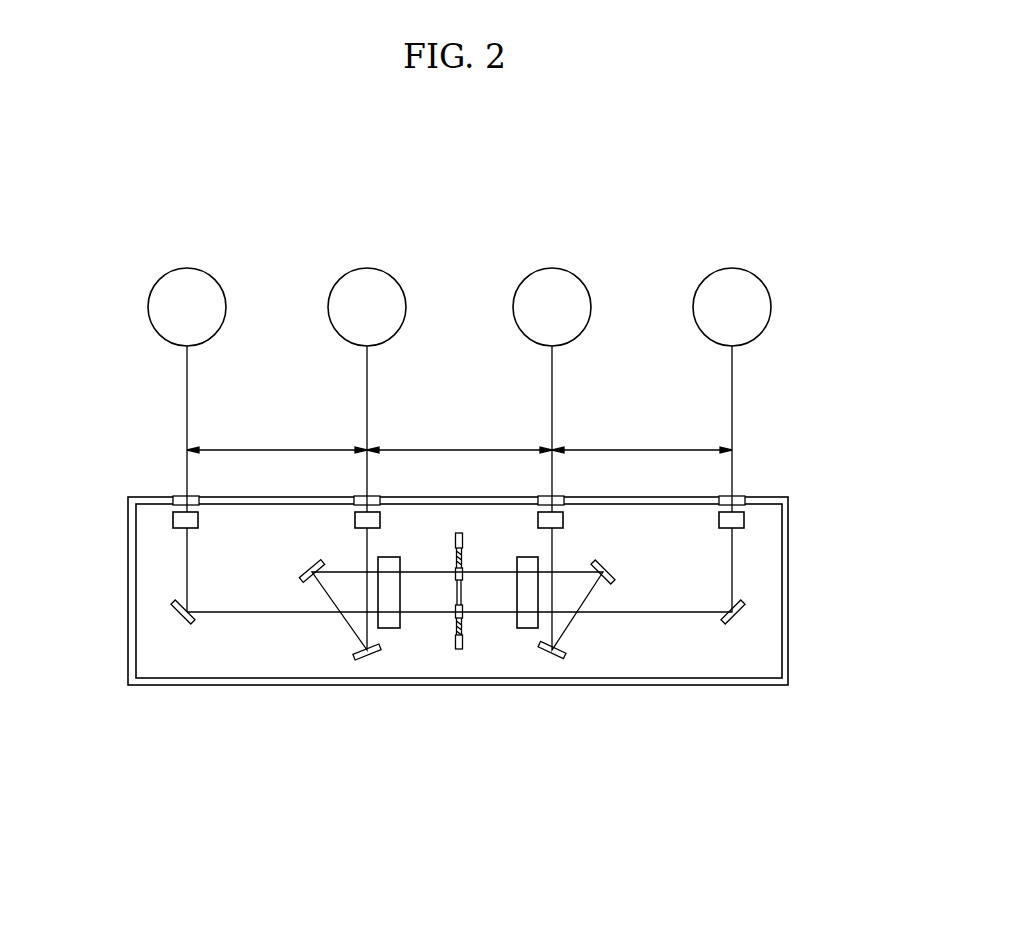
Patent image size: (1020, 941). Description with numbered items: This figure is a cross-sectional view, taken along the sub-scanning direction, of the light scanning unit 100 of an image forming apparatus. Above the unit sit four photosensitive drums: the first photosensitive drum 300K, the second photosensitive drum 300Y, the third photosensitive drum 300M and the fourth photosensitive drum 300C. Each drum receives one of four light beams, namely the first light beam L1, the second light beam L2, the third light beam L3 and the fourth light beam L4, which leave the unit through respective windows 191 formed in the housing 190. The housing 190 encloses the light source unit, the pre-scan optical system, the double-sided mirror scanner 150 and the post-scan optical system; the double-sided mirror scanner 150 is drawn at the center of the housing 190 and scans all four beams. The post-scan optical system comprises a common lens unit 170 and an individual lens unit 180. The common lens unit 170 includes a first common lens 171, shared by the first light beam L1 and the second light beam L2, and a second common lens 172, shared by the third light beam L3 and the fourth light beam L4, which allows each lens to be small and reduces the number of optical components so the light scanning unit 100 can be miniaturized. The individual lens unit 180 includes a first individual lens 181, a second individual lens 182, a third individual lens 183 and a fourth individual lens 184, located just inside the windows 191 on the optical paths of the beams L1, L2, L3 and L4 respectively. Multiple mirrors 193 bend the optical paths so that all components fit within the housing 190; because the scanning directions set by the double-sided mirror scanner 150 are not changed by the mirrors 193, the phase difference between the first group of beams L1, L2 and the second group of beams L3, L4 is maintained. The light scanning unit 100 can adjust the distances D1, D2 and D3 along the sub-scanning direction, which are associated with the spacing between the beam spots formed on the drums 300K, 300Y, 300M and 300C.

The light scanning unit 100 is at (787, 432).
The double-sided mirror scanner 150 is at (459, 650).
The common lens unit 170 is at (377, 739).
The first common lens 171 is at (390, 620).
The second common lens 172 is at (527, 620).
The individual lens unit 180 is at (90, 520).
The first individual lens 181 is at (173, 519).
The second individual lens 182 is at (355, 520).
The third individual lens 183 is at (538, 520).
The fourth individual lens 184 is at (719, 520).
The housing 190 is at (788, 552).
The windows 191 is at (200, 496).
The mirrors 193 is at (302, 574).
The first photosensitive drum 300K is at (214, 282).
The second photosensitive drum 300Y is at (394, 282).
The third photosensitive drum 300M is at (579, 282).
The fourth photosensitive drum 300C is at (759, 282).
The first light beam L1 is at (187, 383).
The second light beam L2 is at (367, 383).
The third light beam L3 is at (552, 383).
The fourth light beam L4 is at (732, 383).
The distance along sub-scanning direction D1 is at (277, 439).
The distance along sub-scanning direction D2 is at (459, 439).
The distance along sub-scanning direction D3 is at (642, 439).